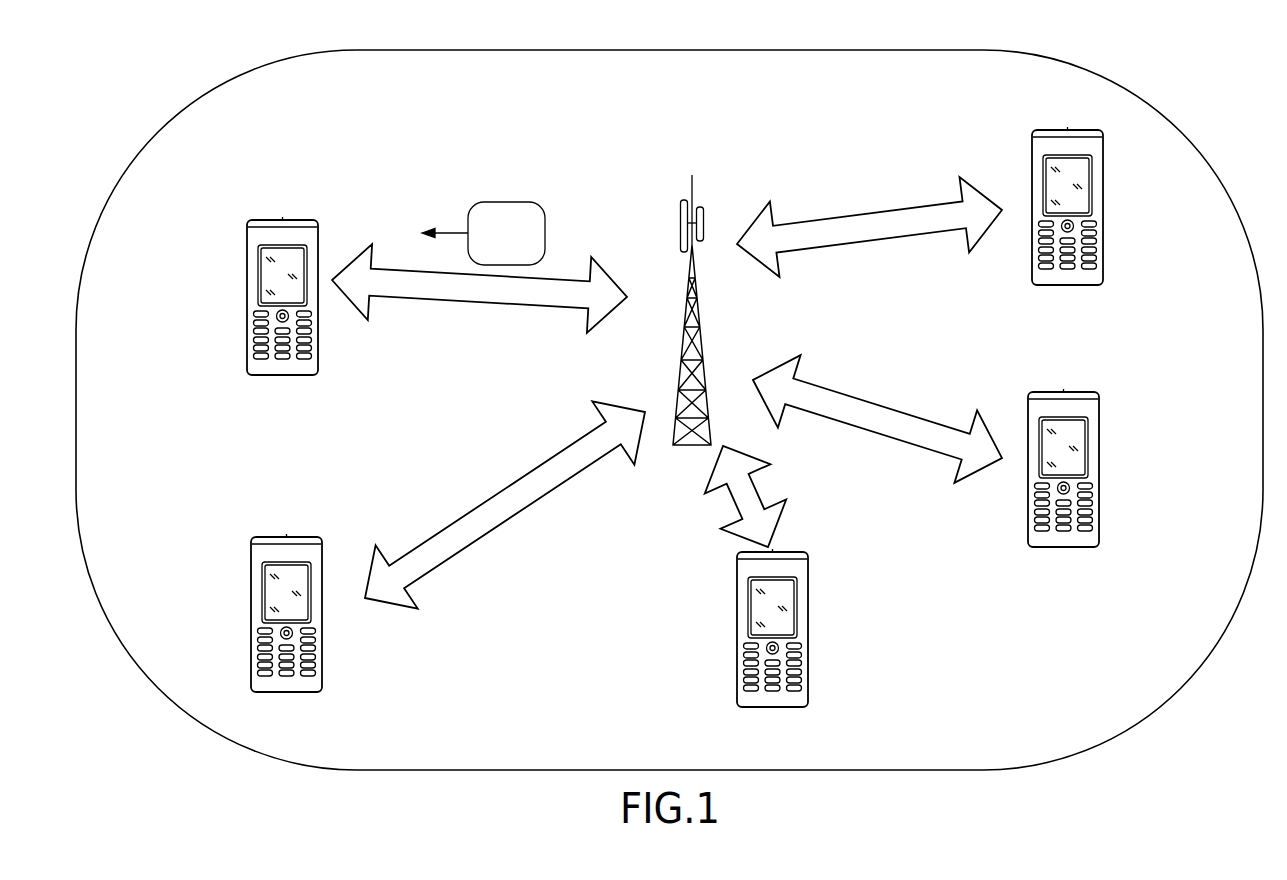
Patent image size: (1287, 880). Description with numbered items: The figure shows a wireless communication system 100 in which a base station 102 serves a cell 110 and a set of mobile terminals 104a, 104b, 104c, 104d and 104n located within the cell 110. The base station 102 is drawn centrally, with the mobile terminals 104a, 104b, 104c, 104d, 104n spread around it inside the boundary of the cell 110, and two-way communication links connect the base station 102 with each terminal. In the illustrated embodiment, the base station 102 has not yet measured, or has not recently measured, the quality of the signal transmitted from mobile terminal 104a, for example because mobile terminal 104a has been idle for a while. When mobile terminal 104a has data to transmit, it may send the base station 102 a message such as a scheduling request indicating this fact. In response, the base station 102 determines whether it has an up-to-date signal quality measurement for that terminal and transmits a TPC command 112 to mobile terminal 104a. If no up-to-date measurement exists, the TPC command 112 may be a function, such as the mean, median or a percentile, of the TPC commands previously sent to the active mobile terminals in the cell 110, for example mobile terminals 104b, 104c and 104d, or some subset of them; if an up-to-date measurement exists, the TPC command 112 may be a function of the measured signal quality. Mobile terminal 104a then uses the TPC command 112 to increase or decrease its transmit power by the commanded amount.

The wireless communication system 100 is at (147, 89).
The base station 102 is at (680, 355).
The mobile terminal 104a is at (303, 228).
The mobile terminal 104b is at (303, 545).
The mobile terminal 104c is at (740, 628).
The mobile terminal 104d is at (1096, 465).
The mobile terminal 104n is at (1038, 146).
The cell 110 is at (1163, 124).
The TPC command 112 is at (546, 226).